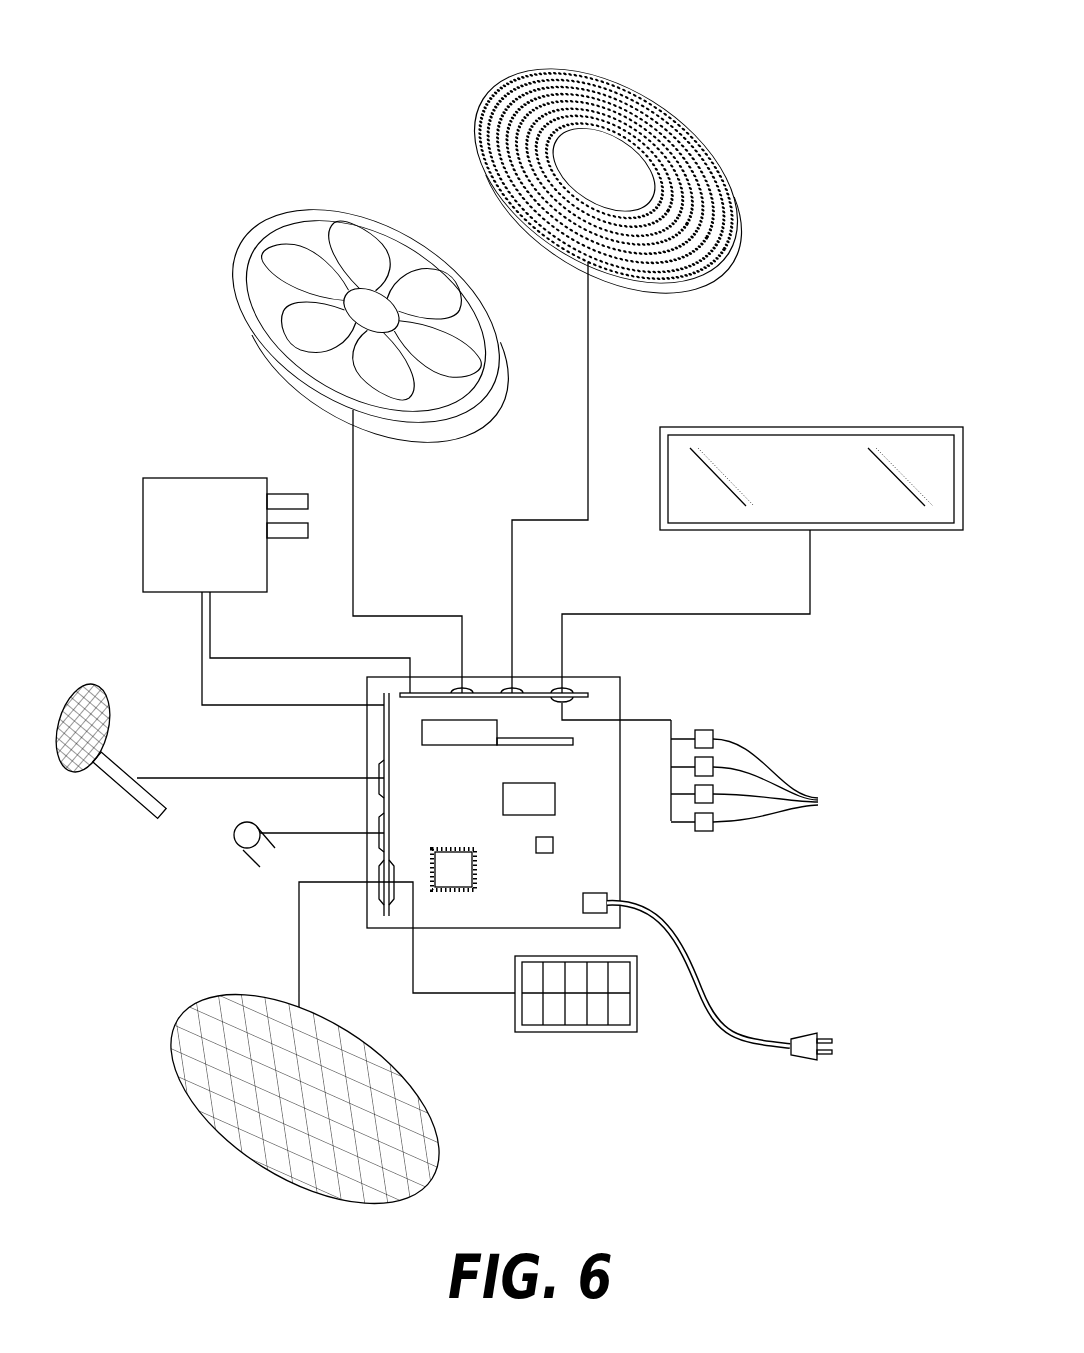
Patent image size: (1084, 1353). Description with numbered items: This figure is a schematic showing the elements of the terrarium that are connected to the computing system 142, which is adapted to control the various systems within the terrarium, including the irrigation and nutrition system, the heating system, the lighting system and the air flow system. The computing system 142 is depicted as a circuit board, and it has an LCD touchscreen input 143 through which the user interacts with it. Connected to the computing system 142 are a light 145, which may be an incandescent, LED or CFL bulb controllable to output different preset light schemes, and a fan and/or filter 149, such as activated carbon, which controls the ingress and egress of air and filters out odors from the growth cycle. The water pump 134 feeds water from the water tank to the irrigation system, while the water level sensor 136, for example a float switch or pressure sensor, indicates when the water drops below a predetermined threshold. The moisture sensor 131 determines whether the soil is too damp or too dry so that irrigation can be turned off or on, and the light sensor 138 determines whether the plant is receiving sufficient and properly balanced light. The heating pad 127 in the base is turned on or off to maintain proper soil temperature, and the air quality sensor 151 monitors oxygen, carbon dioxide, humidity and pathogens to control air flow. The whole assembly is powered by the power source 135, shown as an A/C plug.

The heating pad 127 is at (287, 1177).
The moisture sensor 131 is at (763, 775).
The water pump 134 is at (202, 477).
The power source 135 is at (802, 1035).
The water level sensor 136 is at (102, 773).
The light sensor 138 is at (243, 852).
The computing system 142 is at (620, 823).
The LCD touchscreen input 143 is at (882, 427).
The light 145 is at (643, 100).
The fan and/or filter 149 is at (295, 210).
The air quality sensor 151 is at (575, 1032).